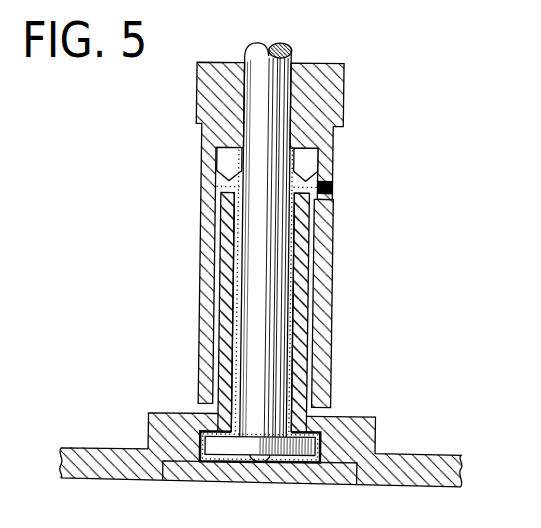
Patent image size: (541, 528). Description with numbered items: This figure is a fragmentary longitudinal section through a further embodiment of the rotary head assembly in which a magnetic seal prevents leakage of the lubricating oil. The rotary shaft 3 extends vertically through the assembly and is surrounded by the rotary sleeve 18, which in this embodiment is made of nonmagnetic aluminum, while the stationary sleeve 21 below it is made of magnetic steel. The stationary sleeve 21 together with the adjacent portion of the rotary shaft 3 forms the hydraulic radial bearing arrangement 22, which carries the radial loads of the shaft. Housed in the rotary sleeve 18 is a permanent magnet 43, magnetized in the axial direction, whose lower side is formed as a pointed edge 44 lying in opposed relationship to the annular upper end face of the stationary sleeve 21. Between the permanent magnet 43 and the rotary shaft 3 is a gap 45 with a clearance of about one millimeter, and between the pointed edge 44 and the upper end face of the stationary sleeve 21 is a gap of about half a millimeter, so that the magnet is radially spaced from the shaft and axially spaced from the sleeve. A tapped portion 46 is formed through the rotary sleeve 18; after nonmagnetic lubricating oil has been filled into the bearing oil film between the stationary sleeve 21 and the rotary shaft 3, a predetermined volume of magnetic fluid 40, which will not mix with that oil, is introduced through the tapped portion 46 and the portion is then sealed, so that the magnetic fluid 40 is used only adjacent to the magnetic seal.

The rotary shaft 3 is at (247, 91).
The rotary sleeve 18 is at (332, 98).
The stationary sleeve 21 is at (303, 260).
The hydraulic radial bearing arrangement 22 is at (233, 362).
The magnetic fluid 40 is at (227, 188).
The permanent magnet 43 is at (314, 160).
The pointed edge 44 is at (224, 173).
The gap 45 is at (240, 154).
The tapped portion 46 is at (332, 192).